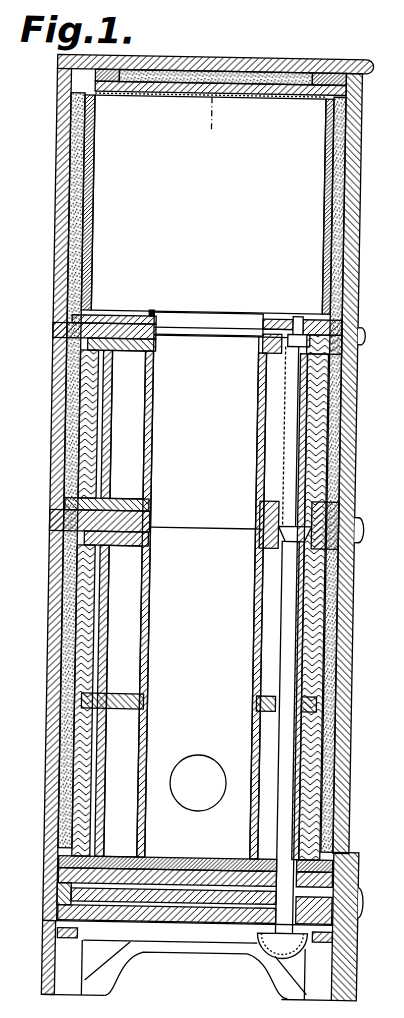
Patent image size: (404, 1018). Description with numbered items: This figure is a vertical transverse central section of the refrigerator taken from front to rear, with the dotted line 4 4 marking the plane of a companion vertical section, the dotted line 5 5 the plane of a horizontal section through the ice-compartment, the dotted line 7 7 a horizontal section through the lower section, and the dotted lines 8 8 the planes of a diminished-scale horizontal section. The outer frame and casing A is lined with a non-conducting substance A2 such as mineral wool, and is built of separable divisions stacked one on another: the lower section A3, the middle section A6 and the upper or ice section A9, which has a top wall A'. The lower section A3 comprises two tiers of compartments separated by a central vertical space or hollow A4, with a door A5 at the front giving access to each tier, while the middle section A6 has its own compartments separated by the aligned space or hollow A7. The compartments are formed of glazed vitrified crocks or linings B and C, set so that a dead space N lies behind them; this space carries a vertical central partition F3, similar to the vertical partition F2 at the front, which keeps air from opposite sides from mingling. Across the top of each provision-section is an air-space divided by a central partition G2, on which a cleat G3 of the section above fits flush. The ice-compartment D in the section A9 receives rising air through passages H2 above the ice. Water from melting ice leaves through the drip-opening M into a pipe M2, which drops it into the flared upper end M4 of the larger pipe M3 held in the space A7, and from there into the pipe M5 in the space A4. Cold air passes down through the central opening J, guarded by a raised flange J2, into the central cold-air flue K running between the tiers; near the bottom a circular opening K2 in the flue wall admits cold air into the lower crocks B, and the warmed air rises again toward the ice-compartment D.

The dotted line 4 4 is at (205, 60).
The dotted line 5 5 is at (116, 257).
The dotted line 7 7 is at (66, 783).
The dotted lines 8 8 is at (98, 404).
The outer frame and casing A is at (189, 490).
The casing top wall A' is at (381, 157).
The non-conducting substance A2 is at (53, 438).
The lower section A3 is at (51, 682).
The space or hollow A4 is at (133, 664).
The door A5 is at (386, 293).
The middle section A6 is at (48, 483).
The space or hollow A7 is at (133, 390).
The upper or ice section A9 is at (356, 240).
The crock or lining B is at (198, 744).
The crock or lining C is at (125, 603).
The ice-compartment D is at (208, 204).
The vertical partition F2 is at (316, 450).
The vertical central partition F3 is at (116, 431).
The central partition G2 is at (150, 342).
The cleat G3 is at (148, 508).
The passage H2 is at (255, 112).
The central opening J is at (177, 316).
The raised guard or flange J2 is at (147, 311).
The central cold-air flue K is at (205, 596).
The circular opening K2 is at (207, 756).
The drip-opening M is at (287, 318).
The pipe M2 is at (223, 327).
The pipe M3 is at (281, 450).
The flared upper end M4 is at (282, 340).
The pipe M5 is at (283, 670).
The dead space N is at (326, 607).